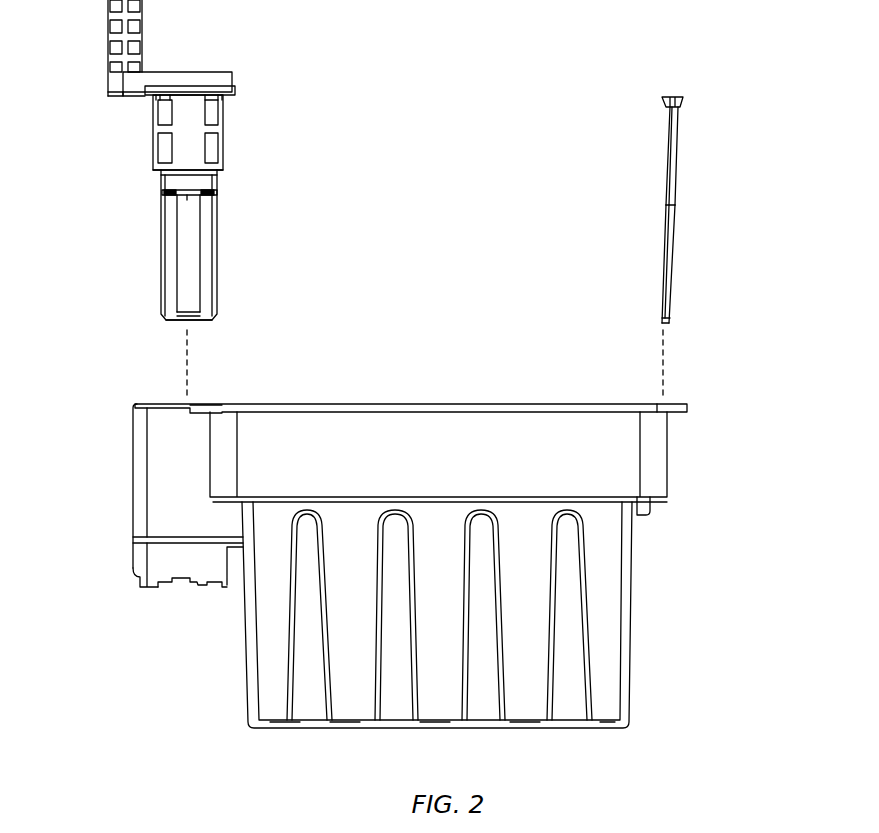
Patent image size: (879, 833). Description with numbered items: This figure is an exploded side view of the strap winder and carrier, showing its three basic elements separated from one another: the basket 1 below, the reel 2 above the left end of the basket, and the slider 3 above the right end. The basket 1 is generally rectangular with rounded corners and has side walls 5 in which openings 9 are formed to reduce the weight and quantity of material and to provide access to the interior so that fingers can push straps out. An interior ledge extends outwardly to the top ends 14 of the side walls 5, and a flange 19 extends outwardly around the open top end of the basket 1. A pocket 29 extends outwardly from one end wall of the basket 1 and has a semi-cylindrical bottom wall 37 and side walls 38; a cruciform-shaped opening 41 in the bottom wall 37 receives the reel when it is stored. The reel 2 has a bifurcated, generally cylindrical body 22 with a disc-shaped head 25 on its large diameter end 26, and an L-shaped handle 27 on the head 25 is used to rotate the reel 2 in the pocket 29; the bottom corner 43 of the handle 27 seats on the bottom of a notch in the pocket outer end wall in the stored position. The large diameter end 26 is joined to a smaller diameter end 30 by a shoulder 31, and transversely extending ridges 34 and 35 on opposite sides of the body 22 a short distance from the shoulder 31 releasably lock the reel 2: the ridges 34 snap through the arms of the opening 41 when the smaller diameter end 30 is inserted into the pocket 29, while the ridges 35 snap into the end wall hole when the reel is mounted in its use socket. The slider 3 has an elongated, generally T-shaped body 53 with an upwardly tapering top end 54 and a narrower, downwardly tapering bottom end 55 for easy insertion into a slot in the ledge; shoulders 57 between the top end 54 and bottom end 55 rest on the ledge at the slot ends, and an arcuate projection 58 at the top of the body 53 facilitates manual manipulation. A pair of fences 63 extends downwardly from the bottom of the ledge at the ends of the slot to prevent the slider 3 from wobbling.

The basket 1 is at (242, 744).
The reel 2 is at (106, 202).
The slider 3 is at (696, 203).
The side walls 5 is at (426, 584).
The openings 9 is at (323, 580).
The top ends of the side walls 14 is at (446, 463).
The flange 19 is at (446, 398).
The body 22 is at (218, 282).
The head 25 is at (207, 72).
The large diameter end 26 is at (226, 130).
The handle 27 is at (108, 44).
The pocket 29 is at (133, 464).
The smaller diameter end 30 is at (160, 284).
The shoulder 31 is at (222, 174).
The ridges 34 is at (218, 193).
The ridges 35 is at (188, 196).
The bottom wall 37 is at (155, 570).
The side walls 38 is at (166, 506).
The opening 41 is at (187, 578).
The bottom corner 43 is at (120, 96).
The body 53 is at (666, 248).
The top end 54 is at (678, 136).
The bottom end 55 is at (669, 292).
The shoulders 57 is at (666, 204).
The arcuate projection 58 is at (663, 100).
The fences 63 is at (652, 512).